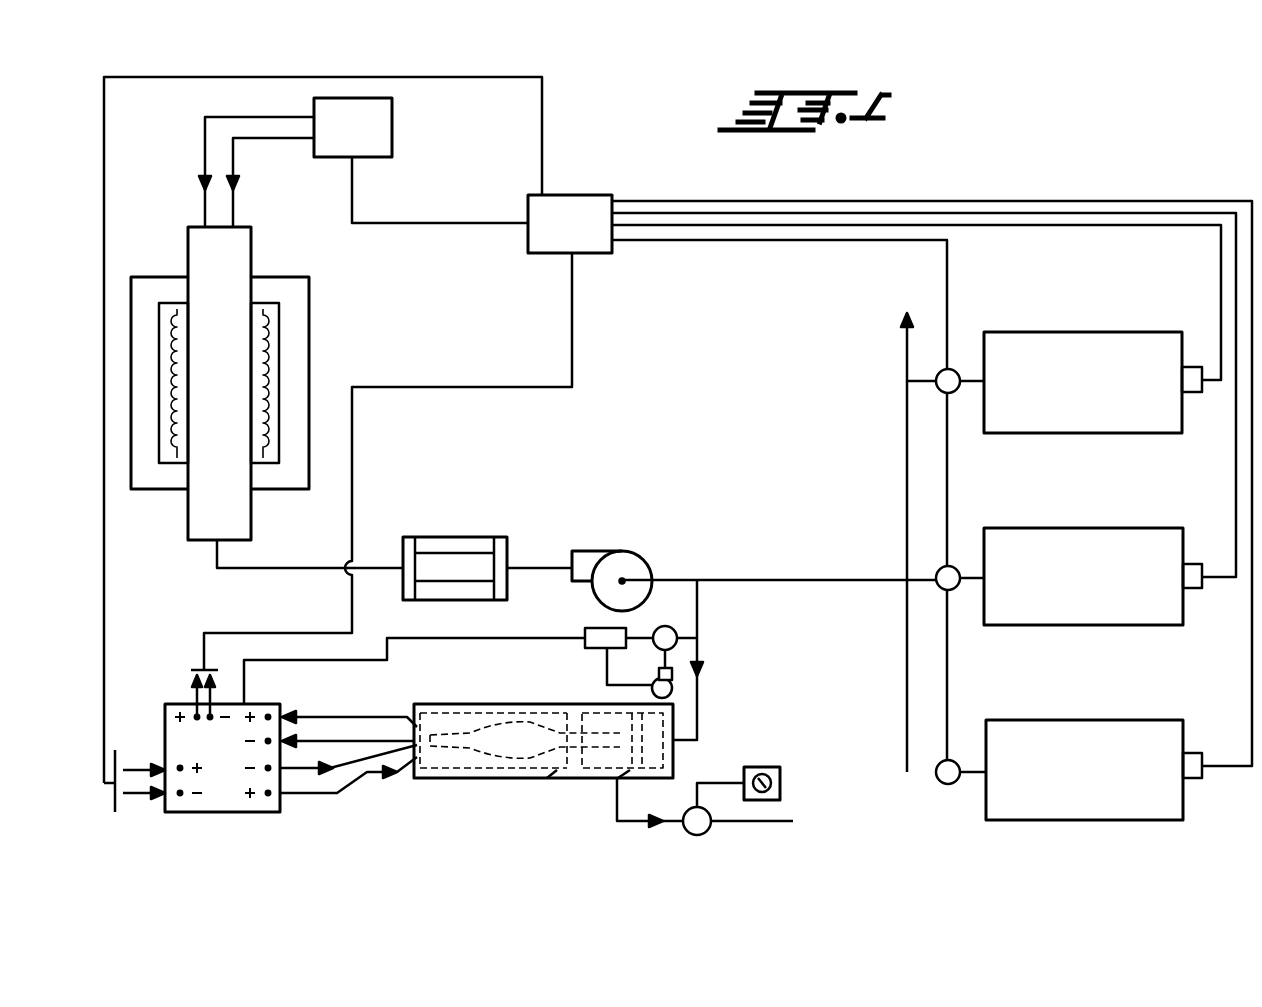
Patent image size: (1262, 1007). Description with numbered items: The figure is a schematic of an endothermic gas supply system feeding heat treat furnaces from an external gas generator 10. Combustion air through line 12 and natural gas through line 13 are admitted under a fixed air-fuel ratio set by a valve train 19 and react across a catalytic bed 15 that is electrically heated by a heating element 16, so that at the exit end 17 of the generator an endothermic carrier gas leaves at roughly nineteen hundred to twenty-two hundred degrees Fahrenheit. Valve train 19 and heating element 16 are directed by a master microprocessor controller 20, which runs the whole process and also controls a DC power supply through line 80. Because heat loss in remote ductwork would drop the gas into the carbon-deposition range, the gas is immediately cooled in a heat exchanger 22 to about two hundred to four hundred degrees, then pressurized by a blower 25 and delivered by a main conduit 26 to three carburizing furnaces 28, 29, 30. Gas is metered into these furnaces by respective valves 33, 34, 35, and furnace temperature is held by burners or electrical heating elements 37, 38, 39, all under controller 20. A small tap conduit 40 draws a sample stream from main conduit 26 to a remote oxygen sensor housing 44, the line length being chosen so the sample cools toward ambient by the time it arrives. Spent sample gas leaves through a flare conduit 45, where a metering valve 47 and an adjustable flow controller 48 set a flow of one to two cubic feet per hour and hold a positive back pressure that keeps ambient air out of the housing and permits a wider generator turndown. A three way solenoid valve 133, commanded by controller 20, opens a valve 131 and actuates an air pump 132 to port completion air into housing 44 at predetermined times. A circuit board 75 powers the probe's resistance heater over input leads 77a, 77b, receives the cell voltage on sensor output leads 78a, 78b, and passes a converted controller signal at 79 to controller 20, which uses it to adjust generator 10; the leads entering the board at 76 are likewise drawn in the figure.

The line 80 is at (279, 77).
The natural gas line 13 is at (263, 117).
The valve train 19 is at (392, 118).
The combustion air line 12 is at (259, 138).
The external gas generator 10 is at (309, 300).
The catalytic bed 15 is at (253, 257).
The heating element 16 is at (263, 340).
The exit end 17 is at (217, 542).
The master microprocessor controller 20 is at (565, 195).
The heat exchanger 22 is at (452, 537).
The blower 25 is at (597, 552).
The main conduit 26 is at (687, 579).
The valve 35 is at (951, 369).
The heat treat furnace 30 is at (1075, 434).
The burner or electrical heating element 39 is at (1193, 393).
The valve 34 is at (952, 566).
The heat treat furnace 29 is at (1075, 626).
The burner or electrical heating element 38 is at (1195, 590).
The valve 33 is at (952, 760).
The heat treat furnace 28 is at (1085, 821).
The burner or electrical heating element 37 is at (1197, 780).
The tap conduit 40 is at (699, 638).
The three way solenoid valve 133 is at (597, 628).
The valve 131 is at (660, 627).
The air pump 132 is at (658, 673).
The oxygen sensor housing 44 is at (522, 704).
The circuit board 75 is at (226, 812).
The controller signal output 79 is at (187, 692).
The input leads 76 is at (165, 800).
The sensor output lead 78a is at (286, 715).
The sensor output lead 78b is at (340, 742).
The input lead 77b is at (313, 770).
The input lead 77a is at (287, 795).
The flare conduit 45 is at (620, 825).
The metering valve 47 is at (700, 835).
The adjustable flow controller 48 is at (763, 767).